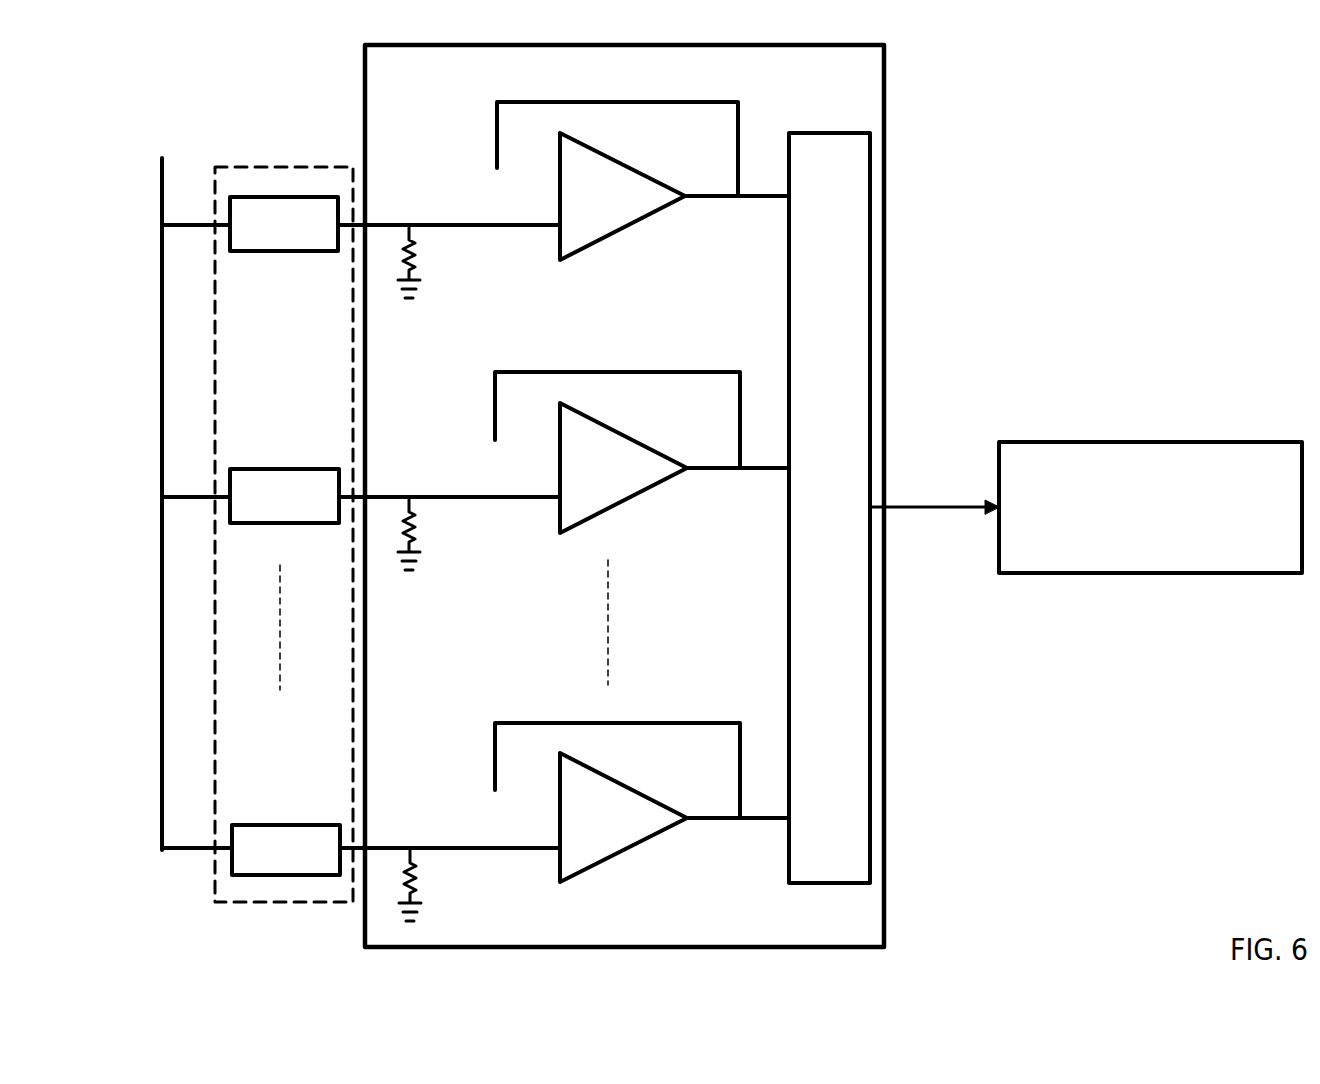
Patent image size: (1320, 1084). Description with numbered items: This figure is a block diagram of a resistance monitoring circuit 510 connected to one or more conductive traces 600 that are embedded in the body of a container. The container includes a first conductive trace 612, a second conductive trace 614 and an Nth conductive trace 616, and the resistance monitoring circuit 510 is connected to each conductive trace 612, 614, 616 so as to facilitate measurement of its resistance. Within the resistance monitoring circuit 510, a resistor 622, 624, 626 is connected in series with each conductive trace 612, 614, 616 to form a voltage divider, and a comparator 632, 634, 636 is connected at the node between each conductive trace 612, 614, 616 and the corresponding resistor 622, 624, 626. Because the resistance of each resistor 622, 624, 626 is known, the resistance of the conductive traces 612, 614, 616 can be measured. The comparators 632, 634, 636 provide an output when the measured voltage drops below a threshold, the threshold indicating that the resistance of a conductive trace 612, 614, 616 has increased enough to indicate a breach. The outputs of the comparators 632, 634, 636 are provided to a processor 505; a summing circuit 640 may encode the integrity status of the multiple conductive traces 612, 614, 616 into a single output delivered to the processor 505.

The conductive traces 600 is at (223, 170).
The first conductive trace 612 is at (228, 242).
The second conductive trace 614 is at (228, 512).
The Nth conductive trace 616 is at (228, 870).
The resistor 622 is at (420, 265).
The resistor 624 is at (420, 533).
The resistor 626 is at (420, 862).
The comparator 632 is at (620, 218).
The comparator 634 is at (622, 497).
The comparator 636 is at (622, 850).
The summing circuit 640 is at (867, 347).
The resistance monitoring circuit 510 is at (884, 242).
The processor 505 is at (1177, 452).